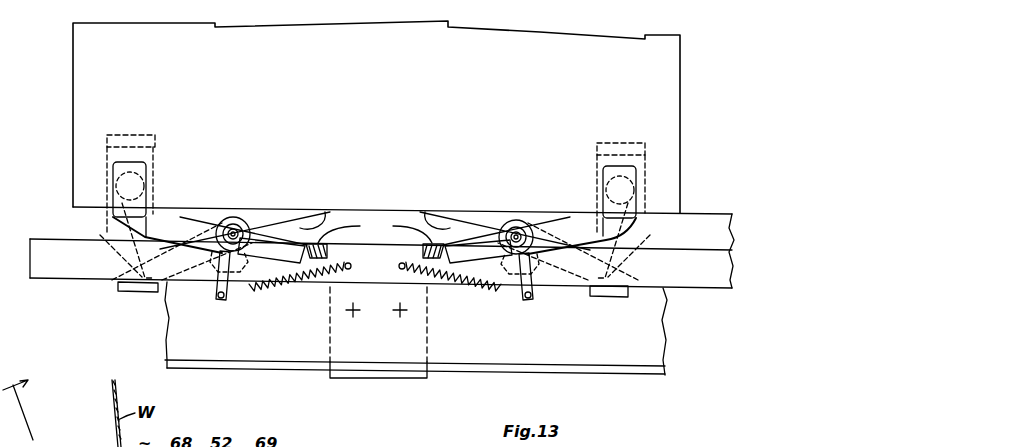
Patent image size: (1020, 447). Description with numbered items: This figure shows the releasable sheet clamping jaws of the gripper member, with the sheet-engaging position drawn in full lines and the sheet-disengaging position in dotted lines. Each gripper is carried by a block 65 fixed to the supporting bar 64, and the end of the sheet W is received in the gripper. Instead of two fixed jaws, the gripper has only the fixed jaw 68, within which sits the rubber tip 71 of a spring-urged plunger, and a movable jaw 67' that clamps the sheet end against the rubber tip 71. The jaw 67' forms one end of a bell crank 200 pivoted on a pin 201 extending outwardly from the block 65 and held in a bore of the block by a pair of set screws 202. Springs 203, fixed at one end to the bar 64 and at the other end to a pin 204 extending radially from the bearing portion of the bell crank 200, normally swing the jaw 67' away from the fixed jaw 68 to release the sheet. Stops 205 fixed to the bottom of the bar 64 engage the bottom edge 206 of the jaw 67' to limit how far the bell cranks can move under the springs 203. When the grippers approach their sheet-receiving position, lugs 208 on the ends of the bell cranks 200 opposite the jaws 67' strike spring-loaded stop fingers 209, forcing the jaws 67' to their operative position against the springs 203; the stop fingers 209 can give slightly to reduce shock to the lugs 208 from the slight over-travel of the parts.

The sheet W is at (73, 80).
The supporting bar 64 is at (77, 273).
The block 65 is at (683, 212).
The jaw 67' is at (374, 181).
The fixed jaw 68 is at (137, 134).
The rubber tip 71 is at (116, 182).
The bell crank 200 is at (180, 216).
The pin 201 is at (243, 228).
The set screws 202 is at (235, 228).
The springs 203 is at (262, 288).
The pin 204 is at (222, 300).
The stops 205 is at (141, 293).
The bottom edge 206 is at (113, 217).
The lugs 208 is at (322, 212).
The stop fingers 209 is at (375, 230).